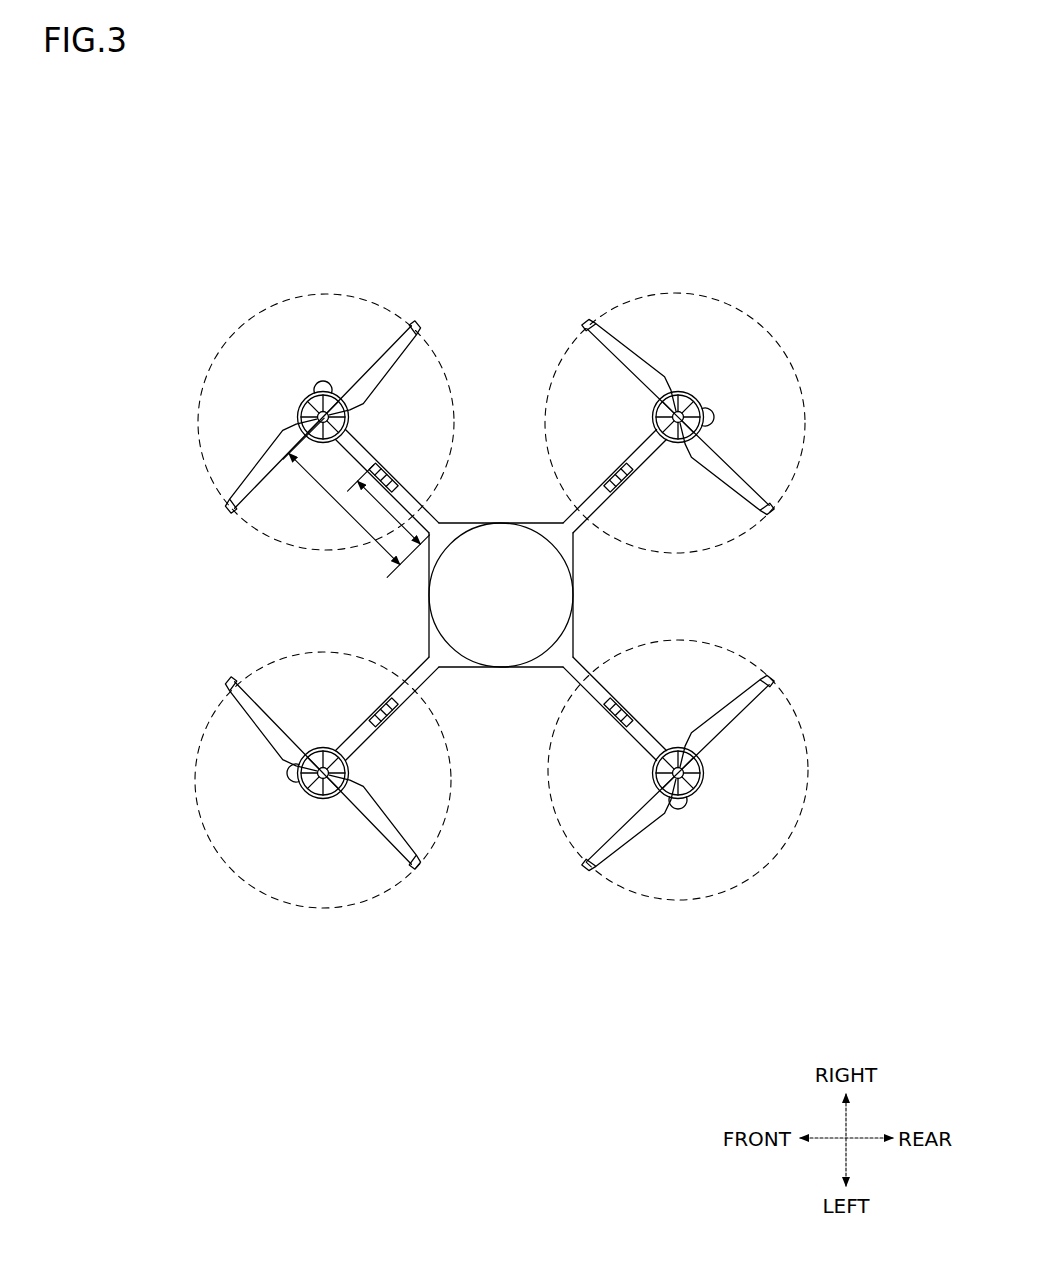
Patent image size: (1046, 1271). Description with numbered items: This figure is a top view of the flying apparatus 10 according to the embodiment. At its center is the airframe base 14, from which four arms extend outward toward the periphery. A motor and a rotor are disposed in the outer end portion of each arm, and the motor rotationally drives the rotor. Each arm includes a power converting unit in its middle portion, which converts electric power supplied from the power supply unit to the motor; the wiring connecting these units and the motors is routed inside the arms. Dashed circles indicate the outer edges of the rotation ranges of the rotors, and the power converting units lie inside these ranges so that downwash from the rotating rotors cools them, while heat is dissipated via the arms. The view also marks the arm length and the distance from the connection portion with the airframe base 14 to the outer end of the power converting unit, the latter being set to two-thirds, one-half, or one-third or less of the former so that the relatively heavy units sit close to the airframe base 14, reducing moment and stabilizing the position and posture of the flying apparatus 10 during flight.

The flying apparatus 10 is at (498, 181).
The airframe base 14 is at (429, 603).